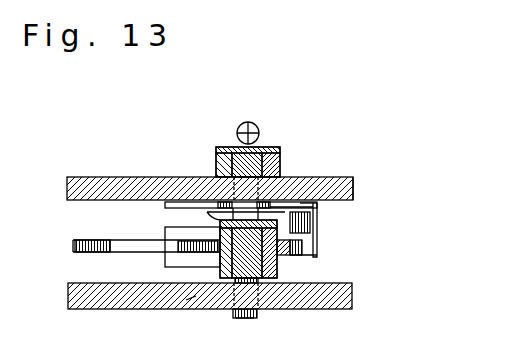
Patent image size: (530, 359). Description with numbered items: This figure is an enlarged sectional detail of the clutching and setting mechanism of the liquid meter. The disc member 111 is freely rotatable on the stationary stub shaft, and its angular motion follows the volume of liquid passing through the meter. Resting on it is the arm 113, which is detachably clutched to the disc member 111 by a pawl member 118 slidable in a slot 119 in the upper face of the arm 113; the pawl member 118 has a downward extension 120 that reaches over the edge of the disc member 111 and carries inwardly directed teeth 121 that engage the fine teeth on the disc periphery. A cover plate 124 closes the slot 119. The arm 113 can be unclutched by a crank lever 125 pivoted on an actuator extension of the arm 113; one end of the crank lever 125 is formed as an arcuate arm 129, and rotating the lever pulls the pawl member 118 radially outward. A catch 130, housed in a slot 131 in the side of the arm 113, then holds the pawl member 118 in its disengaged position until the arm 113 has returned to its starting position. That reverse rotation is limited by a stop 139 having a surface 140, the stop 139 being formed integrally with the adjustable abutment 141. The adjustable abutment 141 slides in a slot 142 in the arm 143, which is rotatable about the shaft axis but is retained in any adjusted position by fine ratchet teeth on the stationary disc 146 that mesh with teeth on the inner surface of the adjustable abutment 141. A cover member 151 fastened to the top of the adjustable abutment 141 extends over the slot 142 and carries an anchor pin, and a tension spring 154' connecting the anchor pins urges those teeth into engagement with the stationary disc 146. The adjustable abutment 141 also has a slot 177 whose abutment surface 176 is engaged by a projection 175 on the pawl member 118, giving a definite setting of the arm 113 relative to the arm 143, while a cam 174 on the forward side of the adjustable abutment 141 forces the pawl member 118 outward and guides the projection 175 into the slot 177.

The disc member 111 is at (100, 302).
The arm 113 is at (190, 299).
The pawl member 118 is at (310, 224).
The slot 119 is at (230, 279).
The downward extension 120 is at (250, 318).
The inwardly directed teeth 121 is at (238, 318).
The cover plate 124 is at (210, 177).
The crank lever 125 is at (166, 253).
The arcuate arm 129 is at (73, 246).
The catch 130 is at (303, 257).
The slot 131 is at (279, 264).
The stop 139 is at (318, 244).
The surface 140 is at (297, 211).
The adjustable abutment 141 is at (280, 150).
The slot 142 is at (275, 172).
The arm 143 is at (283, 161).
The stationary disc 146 is at (95, 156).
The cover member 151 is at (216, 147).
The tension spring 154' is at (285, 120).
The cam 174 is at (165, 206).
The projection 175 is at (354, 191).
The abutment surface 176 is at (347, 178).
The slot 177 is at (290, 180).